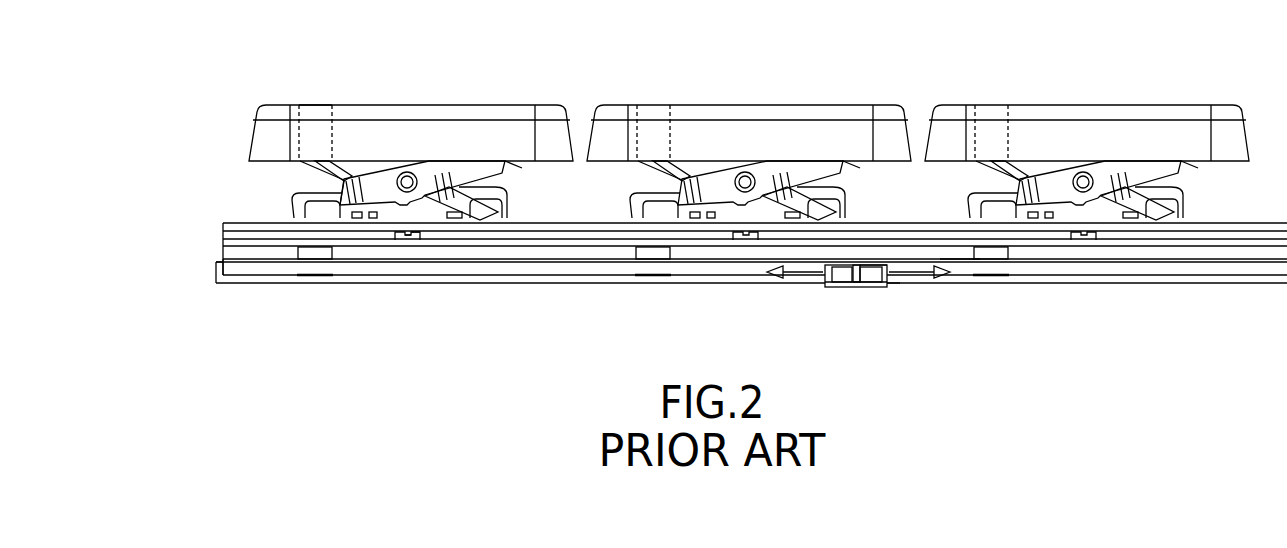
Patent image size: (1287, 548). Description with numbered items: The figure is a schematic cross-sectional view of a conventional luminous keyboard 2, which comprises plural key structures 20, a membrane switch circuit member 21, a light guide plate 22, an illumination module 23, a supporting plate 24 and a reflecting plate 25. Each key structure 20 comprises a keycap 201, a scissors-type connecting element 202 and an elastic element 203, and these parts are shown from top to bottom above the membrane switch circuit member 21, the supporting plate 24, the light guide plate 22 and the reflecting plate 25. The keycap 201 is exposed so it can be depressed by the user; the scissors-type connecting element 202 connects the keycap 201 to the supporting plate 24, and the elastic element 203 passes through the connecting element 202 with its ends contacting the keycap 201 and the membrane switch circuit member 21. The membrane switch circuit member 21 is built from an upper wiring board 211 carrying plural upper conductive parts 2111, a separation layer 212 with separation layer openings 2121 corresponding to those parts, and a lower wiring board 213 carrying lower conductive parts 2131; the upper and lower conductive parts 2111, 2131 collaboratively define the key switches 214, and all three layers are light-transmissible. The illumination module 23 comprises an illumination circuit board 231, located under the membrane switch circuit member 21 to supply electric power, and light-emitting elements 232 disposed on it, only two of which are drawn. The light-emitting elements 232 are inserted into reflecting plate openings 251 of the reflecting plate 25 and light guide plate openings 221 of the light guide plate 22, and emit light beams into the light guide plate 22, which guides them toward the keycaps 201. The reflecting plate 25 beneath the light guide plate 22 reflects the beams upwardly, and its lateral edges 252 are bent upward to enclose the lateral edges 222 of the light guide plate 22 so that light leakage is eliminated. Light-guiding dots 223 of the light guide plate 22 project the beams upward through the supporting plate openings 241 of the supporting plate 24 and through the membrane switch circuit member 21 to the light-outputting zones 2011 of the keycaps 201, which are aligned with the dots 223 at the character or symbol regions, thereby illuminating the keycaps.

The conventional luminous keyboard 2 is at (1090, 44).
The key structure 20 is at (530, 70).
The keycap 201 is at (465, 112).
The light-outputting zone 2011 is at (317, 112).
The scissors-type connecting element 202 is at (428, 180).
The elastic element 203 is at (350, 178).
The membrane switch circuit member 21 is at (168, 170).
The upper wiring board 211 is at (268, 226).
The separation layer 212 is at (245, 234).
The lower wiring board 213 is at (244, 247).
The key switch 214 is at (320, 337).
The upper conductive part 2111 is at (402, 241).
The lower conductive part 2131 is at (415, 243).
The separation layer opening 2121 is at (428, 246).
The light guide plate 22 is at (1097, 261).
The light guide plate opening 221 is at (888, 265).
The lateral edge of light guide plate 222 is at (226, 264).
The light-guiding dot 223 is at (958, 262).
The illumination module 23 is at (853, 259).
The illumination circuit board 231 is at (855, 288).
The light-emitting element 232 is at (826, 288).
The supporting plate 24 is at (735, 261).
The supporting plate opening 241 is at (296, 262).
The reflecting plate 25 is at (1187, 277).
The reflecting plate opening 251 is at (889, 288).
The lateral edge of reflecting plate 252 is at (220, 268).